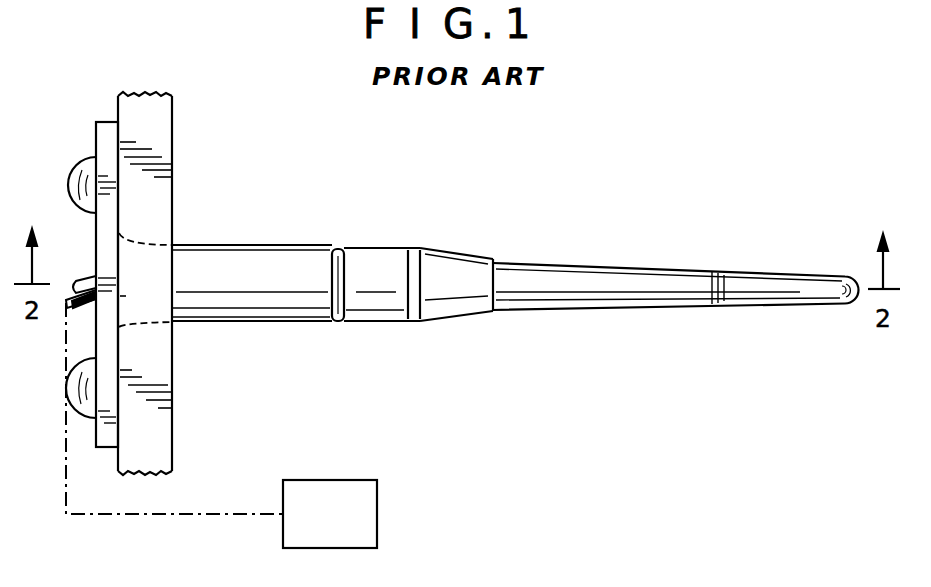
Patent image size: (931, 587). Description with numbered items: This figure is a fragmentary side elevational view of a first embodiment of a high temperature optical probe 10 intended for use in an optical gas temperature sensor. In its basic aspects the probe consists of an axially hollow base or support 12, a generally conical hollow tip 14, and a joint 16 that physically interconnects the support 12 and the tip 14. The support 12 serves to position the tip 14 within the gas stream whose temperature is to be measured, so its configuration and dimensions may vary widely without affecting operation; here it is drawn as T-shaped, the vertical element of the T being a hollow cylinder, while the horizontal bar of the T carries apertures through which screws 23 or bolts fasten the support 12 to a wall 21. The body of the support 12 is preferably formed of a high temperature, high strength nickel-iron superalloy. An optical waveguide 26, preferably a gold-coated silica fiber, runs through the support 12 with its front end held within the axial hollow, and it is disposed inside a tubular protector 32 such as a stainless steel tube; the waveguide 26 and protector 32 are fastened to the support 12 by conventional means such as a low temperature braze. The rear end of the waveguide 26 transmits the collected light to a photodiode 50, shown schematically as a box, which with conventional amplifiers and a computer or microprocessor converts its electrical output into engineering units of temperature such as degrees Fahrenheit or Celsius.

The high temperature optical probe 10 is at (307, 172).
The support 12 is at (263, 323).
The tip 14 is at (650, 263).
The joint 16 is at (403, 325).
The wall 21 is at (153, 95).
The screws 23 is at (92, 158).
The waveguide 26 is at (70, 295).
The tubular protector 32 is at (80, 306).
The photodiode 50 is at (377, 503).